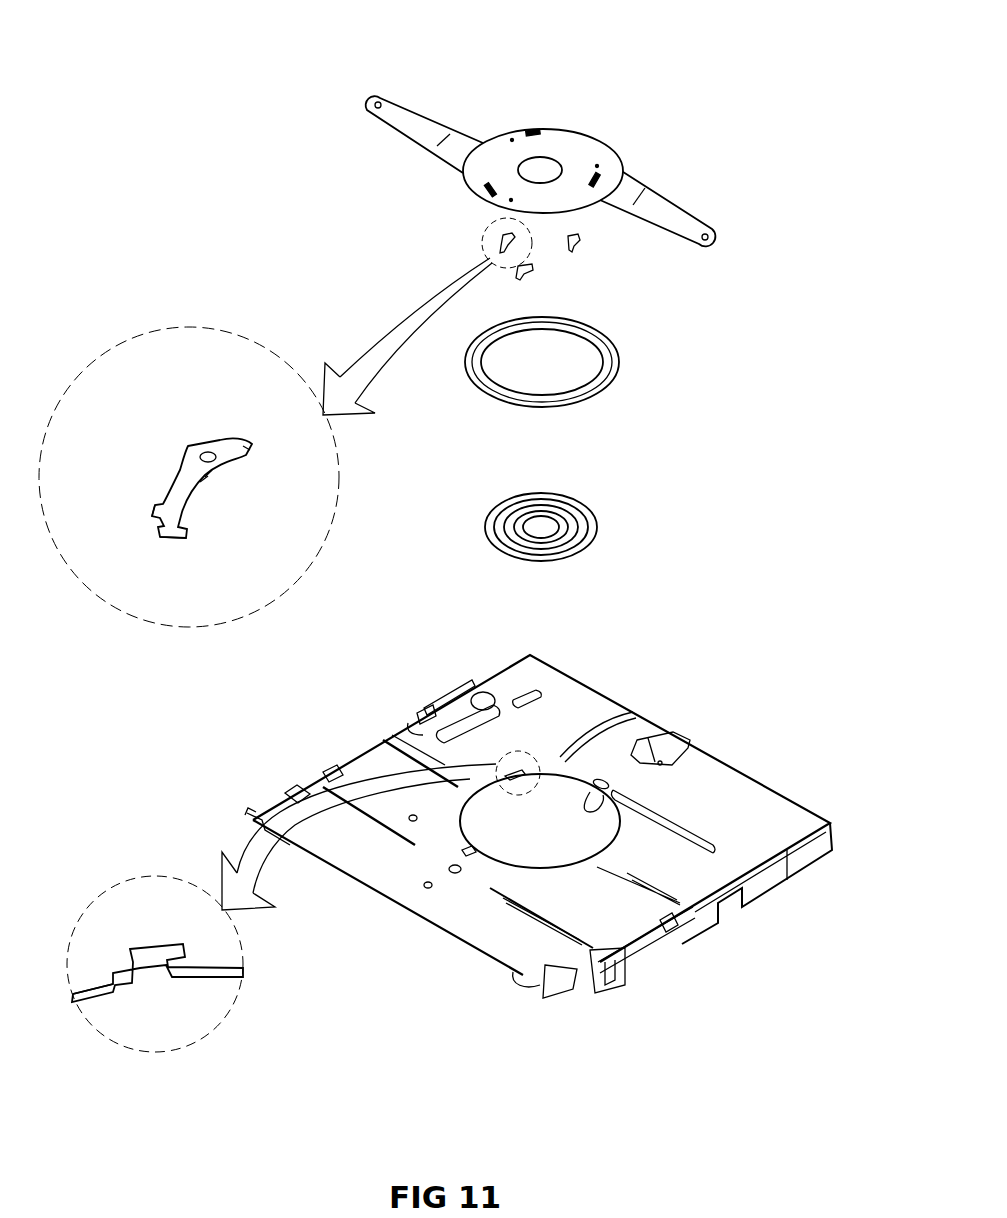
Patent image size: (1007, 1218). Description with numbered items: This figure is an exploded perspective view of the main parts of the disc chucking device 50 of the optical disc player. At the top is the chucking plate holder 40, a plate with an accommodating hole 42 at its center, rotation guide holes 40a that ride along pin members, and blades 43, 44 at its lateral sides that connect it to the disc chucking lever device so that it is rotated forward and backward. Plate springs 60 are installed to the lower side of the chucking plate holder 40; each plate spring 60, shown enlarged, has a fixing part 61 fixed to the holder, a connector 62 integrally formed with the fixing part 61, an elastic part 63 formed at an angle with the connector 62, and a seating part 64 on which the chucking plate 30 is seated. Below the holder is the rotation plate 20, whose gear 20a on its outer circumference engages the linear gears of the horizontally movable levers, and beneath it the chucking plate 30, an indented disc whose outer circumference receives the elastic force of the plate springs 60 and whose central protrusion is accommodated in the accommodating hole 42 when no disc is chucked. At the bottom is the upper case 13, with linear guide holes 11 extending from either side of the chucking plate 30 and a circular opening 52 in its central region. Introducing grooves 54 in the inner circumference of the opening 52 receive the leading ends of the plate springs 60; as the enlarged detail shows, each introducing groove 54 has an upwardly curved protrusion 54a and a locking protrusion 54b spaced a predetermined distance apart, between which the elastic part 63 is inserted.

The disc chucking device 50 is at (85, 145).
The chucking plate holder 40 is at (536, 125).
The rotation guide holes 40a is at (536, 130).
The accommodating hole 42 is at (548, 158).
The blade 43 is at (400, 128).
The blade 44 is at (667, 203).
The plate spring 60 is at (524, 270).
The fixing part 61 is at (248, 451).
The connector 62 is at (198, 486).
The elastic part 63 is at (152, 512).
The seating part 64 is at (188, 537).
The rotation plate 20 is at (569, 390).
The gear 20a is at (621, 362).
The chucking plate 30 is at (596, 523).
The upper case 13 is at (450, 844).
The linear guide holes 11 is at (377, 746).
The circular opening 52 is at (590, 795).
The introducing grooves 54 is at (468, 852).
The upwardly curved protrusion 54a is at (143, 962).
The locking protrusion 54b is at (177, 970).